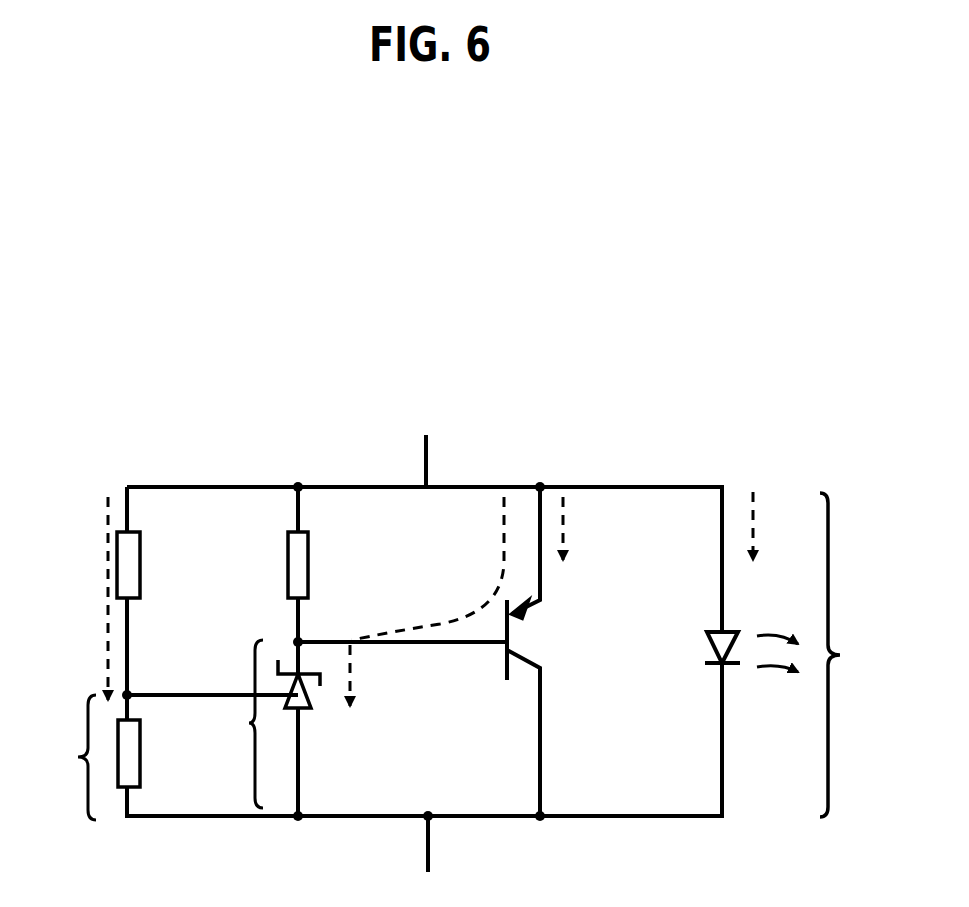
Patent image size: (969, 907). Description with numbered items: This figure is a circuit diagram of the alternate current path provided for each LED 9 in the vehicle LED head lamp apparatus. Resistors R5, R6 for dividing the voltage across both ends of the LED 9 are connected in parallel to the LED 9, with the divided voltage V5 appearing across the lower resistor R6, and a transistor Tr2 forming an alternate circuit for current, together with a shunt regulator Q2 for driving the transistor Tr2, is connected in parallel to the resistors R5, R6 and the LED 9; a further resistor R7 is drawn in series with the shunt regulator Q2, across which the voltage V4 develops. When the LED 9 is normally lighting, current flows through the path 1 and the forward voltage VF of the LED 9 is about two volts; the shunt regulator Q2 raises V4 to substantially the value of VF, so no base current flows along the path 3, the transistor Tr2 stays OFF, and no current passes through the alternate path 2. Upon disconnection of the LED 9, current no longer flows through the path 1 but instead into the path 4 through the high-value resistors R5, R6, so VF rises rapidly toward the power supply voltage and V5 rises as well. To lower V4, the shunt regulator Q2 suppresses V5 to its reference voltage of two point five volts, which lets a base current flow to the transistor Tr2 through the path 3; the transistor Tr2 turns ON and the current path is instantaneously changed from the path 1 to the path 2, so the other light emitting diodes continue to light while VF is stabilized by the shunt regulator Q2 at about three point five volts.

The LED 9 is at (737, 659).
The resistor R5 is at (149, 565).
The resistor R6 is at (151, 753).
The resistor R7 is at (319, 565).
The voltage V4 is at (261, 724).
The voltage V5 is at (66, 757).
The forward voltage of the LED VF is at (855, 655).
The transistor Tr2 is at (566, 632).
The shunt regulator Q2 is at (379, 675).
The path ① 1 is at (775, 526).
The path ② 2 is at (582, 528).
The path ③ 3 is at (428, 568).
The path ④ 4 is at (87, 598).